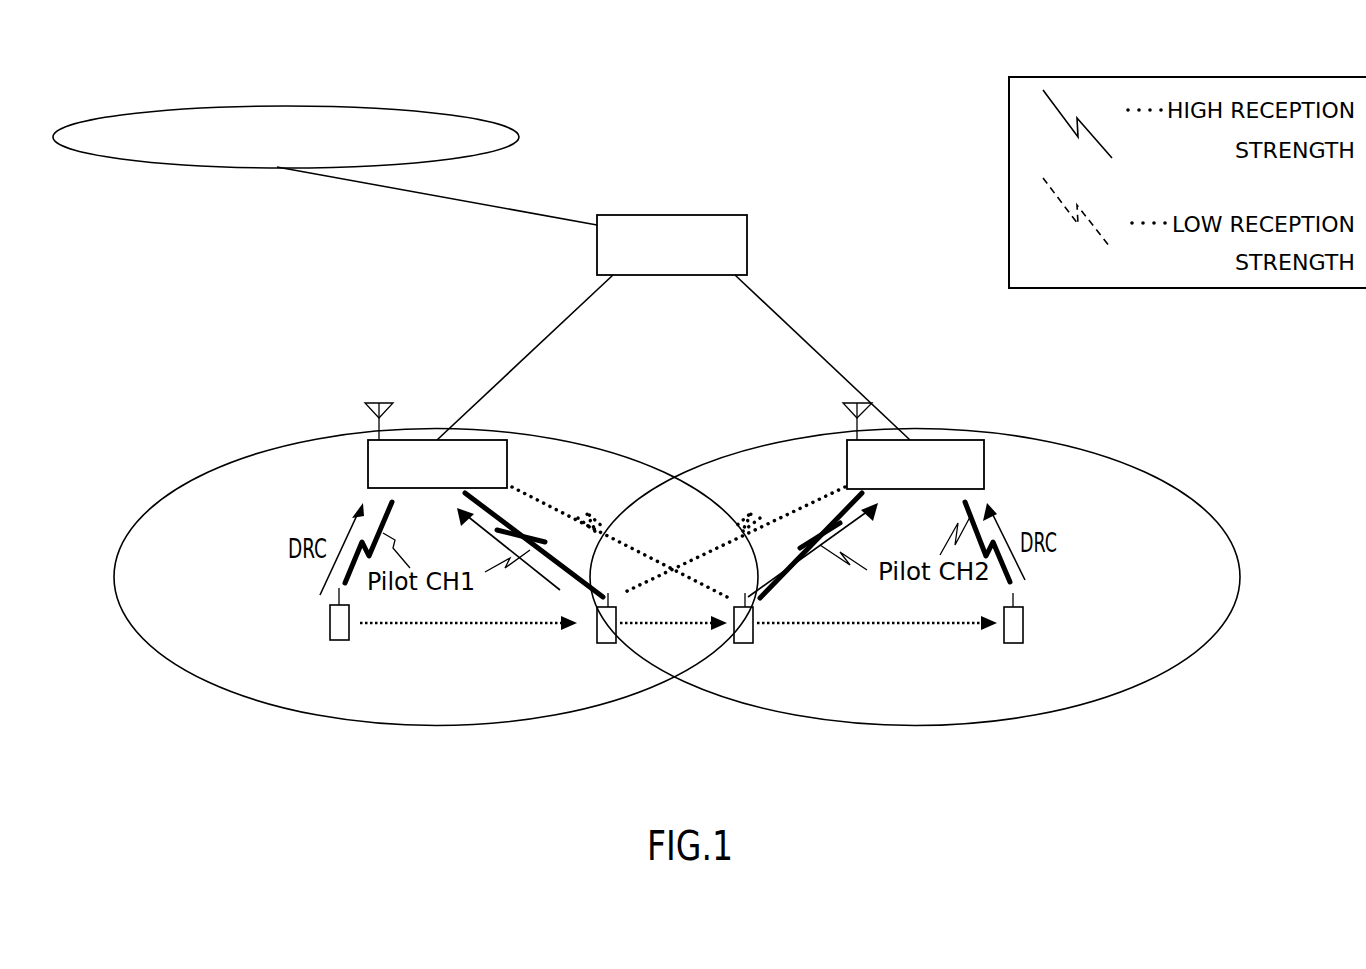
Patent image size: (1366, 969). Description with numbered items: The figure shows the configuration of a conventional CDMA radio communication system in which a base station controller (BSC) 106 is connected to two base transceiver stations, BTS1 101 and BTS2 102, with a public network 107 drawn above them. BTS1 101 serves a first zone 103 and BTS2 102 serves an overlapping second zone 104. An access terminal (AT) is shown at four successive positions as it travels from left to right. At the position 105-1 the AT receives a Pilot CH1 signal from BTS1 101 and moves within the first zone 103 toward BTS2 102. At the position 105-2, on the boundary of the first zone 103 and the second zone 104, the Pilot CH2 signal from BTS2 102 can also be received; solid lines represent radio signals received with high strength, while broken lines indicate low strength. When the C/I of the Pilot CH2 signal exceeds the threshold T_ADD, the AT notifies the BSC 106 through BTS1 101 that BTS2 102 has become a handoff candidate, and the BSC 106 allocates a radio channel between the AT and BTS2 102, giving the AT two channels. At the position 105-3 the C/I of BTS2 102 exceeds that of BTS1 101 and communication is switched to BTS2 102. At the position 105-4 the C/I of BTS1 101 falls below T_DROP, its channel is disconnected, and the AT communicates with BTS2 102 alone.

The BTS1 101 is at (391, 427).
The BTS2 102 is at (941, 427).
The first zone 103 is at (436, 590).
The second zone 104 is at (919, 563).
The position 105-1 is at (288, 636).
The position 105-2 is at (582, 673).
The position 105-3 is at (769, 673).
The position 105-4 is at (1061, 643).
The base station controller 106 is at (723, 230).
The public network 107 is at (344, 130).